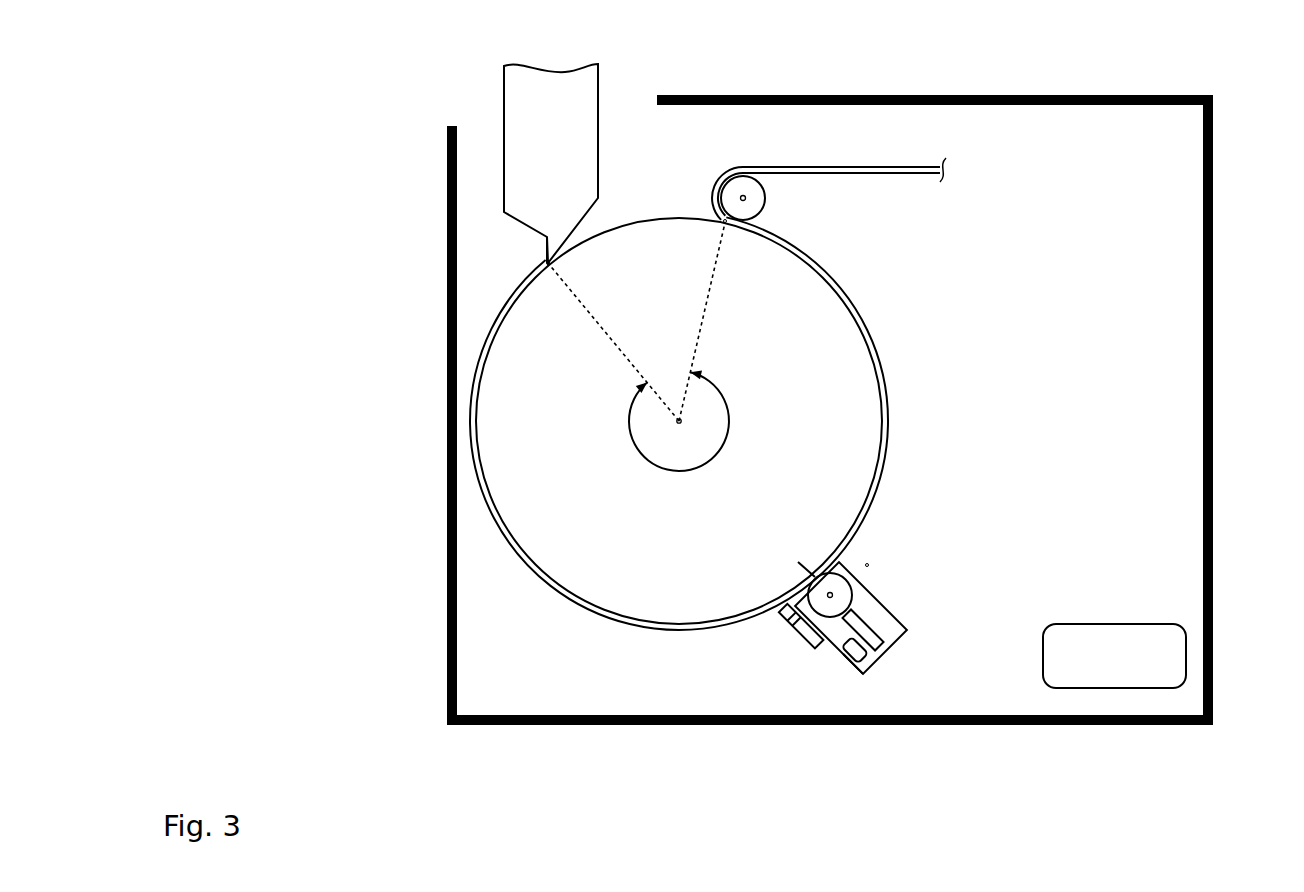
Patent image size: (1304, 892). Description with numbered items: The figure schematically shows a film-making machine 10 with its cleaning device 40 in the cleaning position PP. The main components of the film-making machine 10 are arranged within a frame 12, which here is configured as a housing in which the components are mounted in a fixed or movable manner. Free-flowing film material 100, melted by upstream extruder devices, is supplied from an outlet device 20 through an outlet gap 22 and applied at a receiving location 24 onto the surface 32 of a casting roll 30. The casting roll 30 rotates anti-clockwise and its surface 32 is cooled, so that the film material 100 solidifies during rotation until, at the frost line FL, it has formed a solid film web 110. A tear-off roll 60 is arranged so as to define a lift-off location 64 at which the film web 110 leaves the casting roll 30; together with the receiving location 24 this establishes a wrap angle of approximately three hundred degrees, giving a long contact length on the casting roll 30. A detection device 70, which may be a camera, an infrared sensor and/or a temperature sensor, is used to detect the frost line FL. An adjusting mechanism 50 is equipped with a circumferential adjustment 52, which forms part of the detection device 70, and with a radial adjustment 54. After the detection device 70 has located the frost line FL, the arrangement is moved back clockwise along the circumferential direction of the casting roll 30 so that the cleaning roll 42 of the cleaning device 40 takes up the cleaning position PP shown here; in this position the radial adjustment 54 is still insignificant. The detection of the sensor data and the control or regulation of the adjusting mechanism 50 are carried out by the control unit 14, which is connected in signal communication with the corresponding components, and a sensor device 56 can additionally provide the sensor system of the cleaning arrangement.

The film-making machine 10 is at (262, 148).
The frame 12 is at (1213, 138).
The control unit 14 is at (1114, 656).
The outlet device 20 is at (515, 125).
The outlet gap 22 is at (545, 260).
The receiving location 24 is at (553, 265).
The casting roll 30 is at (618, 645).
The surface 32 is at (623, 223).
The cleaning device 40 is at (924, 563).
The cleaning roll 42 is at (848, 590).
The adjusting mechanism 50 is at (908, 641).
The circumferential adjustment 52 is at (884, 612).
The radial adjustment 54 is at (882, 652).
The sensor device 56 is at (855, 660).
The tear-off roll 60 is at (766, 198).
The lift-off location 64 is at (723, 225).
The detection device 70 is at (802, 636).
The film material 100 is at (680, 630).
The film web 110 is at (855, 167).
The frost line FL is at (790, 555).
The cleaning position PP is at (877, 527).